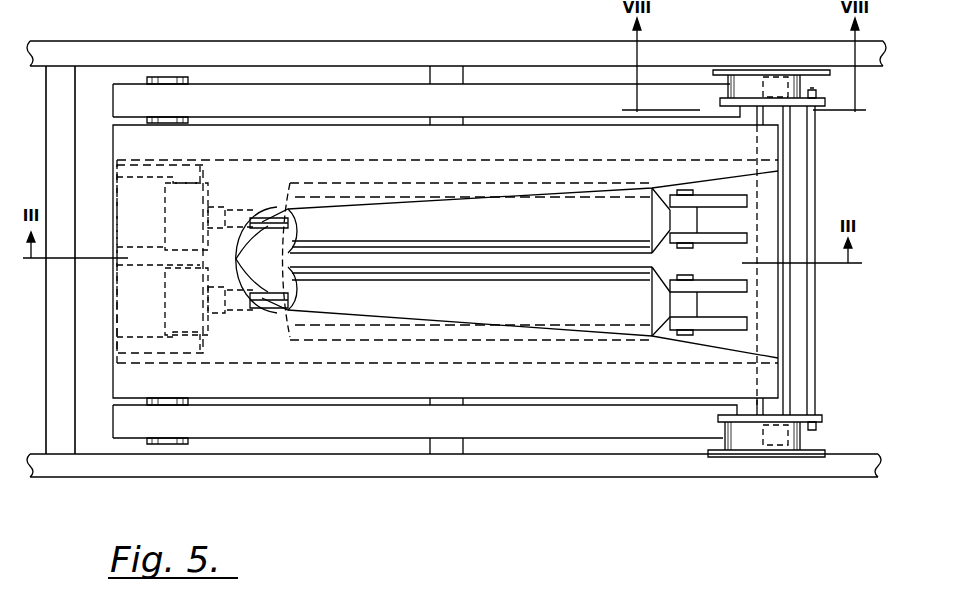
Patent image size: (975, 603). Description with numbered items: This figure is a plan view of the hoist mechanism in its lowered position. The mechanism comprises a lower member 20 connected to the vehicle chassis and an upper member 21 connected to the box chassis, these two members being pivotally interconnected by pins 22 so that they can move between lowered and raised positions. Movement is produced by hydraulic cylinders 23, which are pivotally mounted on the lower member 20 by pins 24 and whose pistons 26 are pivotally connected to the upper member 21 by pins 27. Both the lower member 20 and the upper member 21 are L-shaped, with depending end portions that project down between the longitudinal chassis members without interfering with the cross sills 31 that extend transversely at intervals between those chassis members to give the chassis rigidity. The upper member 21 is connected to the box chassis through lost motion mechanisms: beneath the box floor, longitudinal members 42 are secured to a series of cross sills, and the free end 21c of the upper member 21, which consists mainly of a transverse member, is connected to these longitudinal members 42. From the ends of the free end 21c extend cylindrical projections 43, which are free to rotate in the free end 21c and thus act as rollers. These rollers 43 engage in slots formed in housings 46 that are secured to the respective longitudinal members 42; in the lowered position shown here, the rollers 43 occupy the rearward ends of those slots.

The lower member 20 is at (312, 96).
The upper member 21 is at (233, 139).
The free end 21c is at (778, 320).
The pins 22 is at (165, 78).
The hydraulic cylinders 23 is at (433, 305).
The pins 24 is at (692, 250).
The pistons 26 is at (236, 259).
The pins 27 is at (117, 248).
The cross sills 31 is at (68, 377).
The longitudinal members 42 is at (446, 52).
The cylindrical projections 43 is at (776, 76).
The housings 46 is at (738, 82).